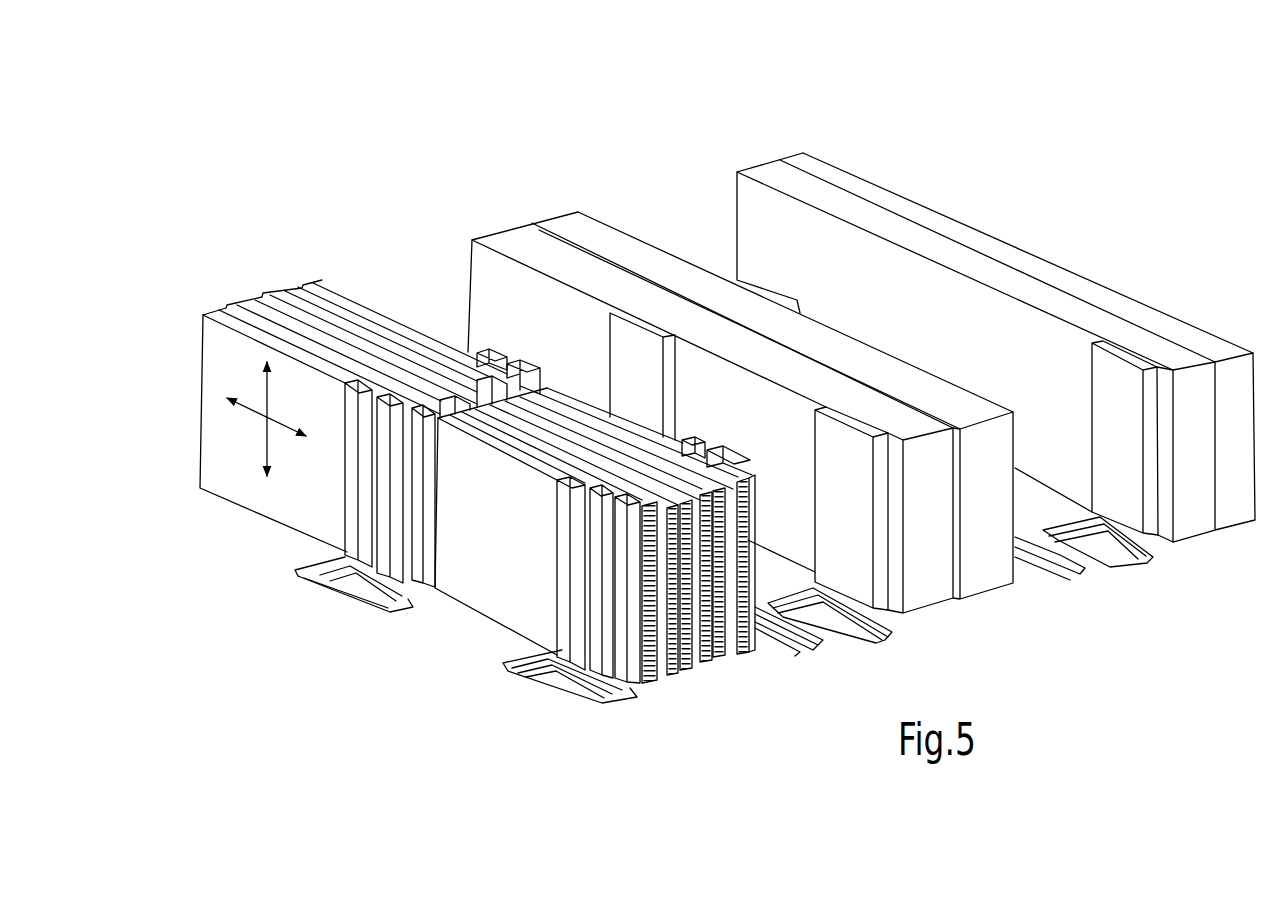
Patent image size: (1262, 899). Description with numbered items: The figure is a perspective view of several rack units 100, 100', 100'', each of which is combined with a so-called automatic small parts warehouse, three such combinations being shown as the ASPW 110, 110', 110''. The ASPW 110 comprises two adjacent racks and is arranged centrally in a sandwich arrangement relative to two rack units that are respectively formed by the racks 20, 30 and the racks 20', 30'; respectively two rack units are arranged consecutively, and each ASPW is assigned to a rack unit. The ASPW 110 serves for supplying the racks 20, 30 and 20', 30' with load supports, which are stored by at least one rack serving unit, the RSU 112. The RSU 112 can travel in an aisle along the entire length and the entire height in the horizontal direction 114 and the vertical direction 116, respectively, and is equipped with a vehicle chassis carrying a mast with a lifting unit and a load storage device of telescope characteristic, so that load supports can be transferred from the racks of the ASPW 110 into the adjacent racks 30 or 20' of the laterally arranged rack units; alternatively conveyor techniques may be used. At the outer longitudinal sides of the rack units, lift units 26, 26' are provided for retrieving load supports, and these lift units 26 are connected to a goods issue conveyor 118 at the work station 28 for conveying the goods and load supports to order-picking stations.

The rack unit 100 is at (318, 349).
The rack unit 100' is at (709, 429).
The rack unit 100'' is at (915, 291).
The automatic small parts warehouse (ASPW) 110 is at (366, 275).
The automatic small parts warehouse (ASPW) 110' is at (780, 364).
The automatic small parts warehouse (ASPW) 110'' is at (981, 291).
The rack 20 is at (268, 410).
The rack 20' is at (373, 298).
The rack 30 is at (311, 311).
The rack 30' is at (402, 292).
The lift unit 26 is at (597, 629).
The lift unit 26' is at (394, 479).
The work station 28 is at (315, 592).
The rack serving unit (RSU) 112 is at (697, 675).
The horizontal direction 114 is at (250, 413).
The vertical direction 116 is at (260, 379).
The goods issue conveyor 118 is at (345, 598).